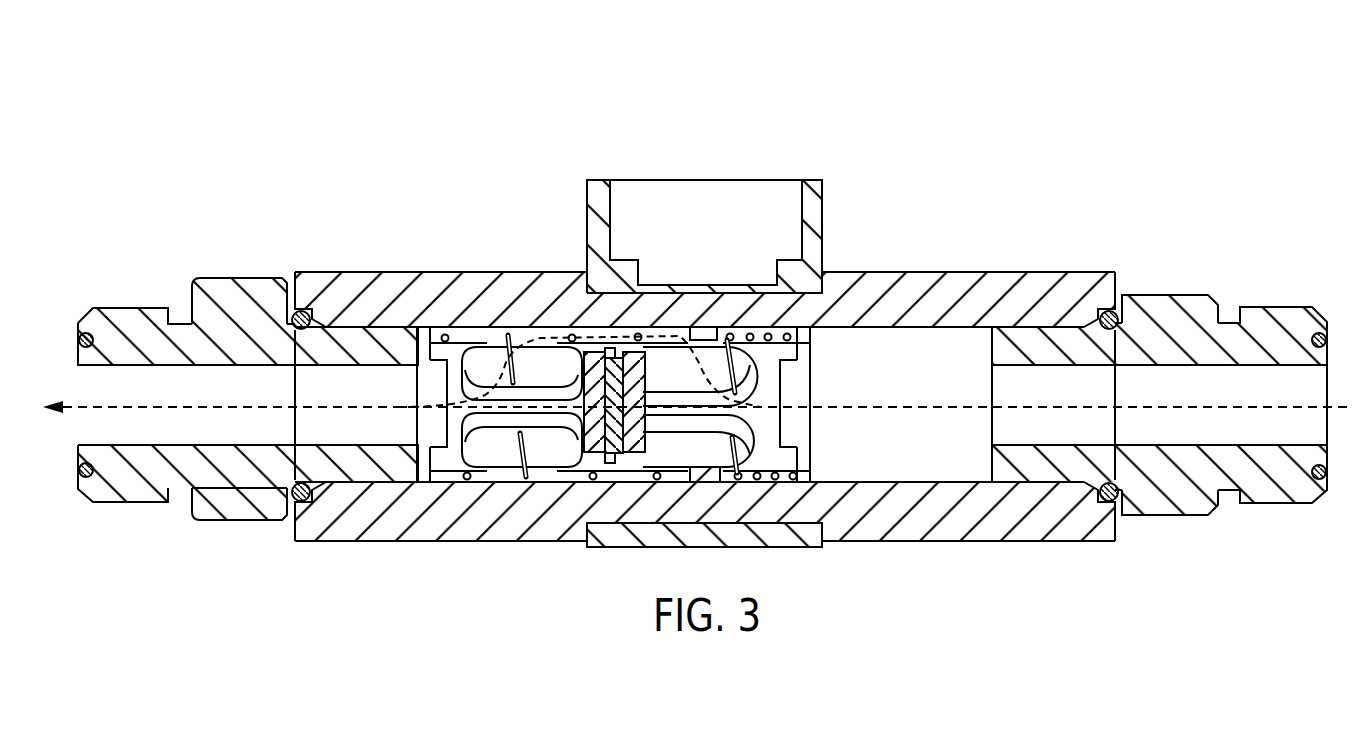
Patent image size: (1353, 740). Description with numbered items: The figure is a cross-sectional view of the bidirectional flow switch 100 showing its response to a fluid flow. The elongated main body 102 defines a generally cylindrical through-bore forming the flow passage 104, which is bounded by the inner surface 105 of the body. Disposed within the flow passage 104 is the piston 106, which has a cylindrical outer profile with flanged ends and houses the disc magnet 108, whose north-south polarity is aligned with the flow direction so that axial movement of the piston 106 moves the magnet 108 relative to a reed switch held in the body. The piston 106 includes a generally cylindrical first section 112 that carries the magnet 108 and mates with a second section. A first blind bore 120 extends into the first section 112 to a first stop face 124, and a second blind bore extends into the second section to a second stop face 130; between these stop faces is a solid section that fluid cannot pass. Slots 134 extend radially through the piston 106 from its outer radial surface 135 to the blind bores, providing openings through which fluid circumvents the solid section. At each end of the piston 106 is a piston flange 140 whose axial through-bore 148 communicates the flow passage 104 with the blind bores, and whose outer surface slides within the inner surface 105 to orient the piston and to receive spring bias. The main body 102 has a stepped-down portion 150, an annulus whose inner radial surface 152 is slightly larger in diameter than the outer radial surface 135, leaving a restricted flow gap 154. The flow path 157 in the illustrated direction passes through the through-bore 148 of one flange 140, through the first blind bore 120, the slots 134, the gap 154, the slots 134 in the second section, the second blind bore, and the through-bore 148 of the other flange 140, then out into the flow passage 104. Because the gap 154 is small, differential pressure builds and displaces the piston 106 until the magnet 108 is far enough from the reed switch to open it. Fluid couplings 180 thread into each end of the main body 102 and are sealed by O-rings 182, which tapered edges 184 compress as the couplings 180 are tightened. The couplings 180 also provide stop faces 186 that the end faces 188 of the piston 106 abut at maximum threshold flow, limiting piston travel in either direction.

The bidirectional flow switch 100 is at (696, 335).
The main body 102 is at (342, 273).
The flow passage 104 is at (232, 447).
The inner surface 105 is at (455, 302).
The piston 106 is at (572, 328).
The magnet 108 is at (607, 445).
The first section 112 is at (822, 282).
The first blind bore 120 is at (812, 428).
The first stop face 124 is at (645, 445).
The second stop face 130 is at (542, 470).
The slots 134 is at (500, 466).
The outer radial surface 135 is at (740, 332).
The piston flange 140 is at (420, 472).
The axial through-bore 148 is at (440, 452).
The stepped-down portion 150 is at (720, 462).
The inner radial surface 152 is at (708, 335).
The restricted flow gap 154 is at (670, 340).
The flow path 157 is at (1092, 406).
The fluid couplings 180 is at (242, 520).
The O-rings 182 is at (1122, 497).
The tapered edges 184 is at (1106, 500).
The stop faces 186 is at (432, 460).
The end faces 188 is at (425, 343).